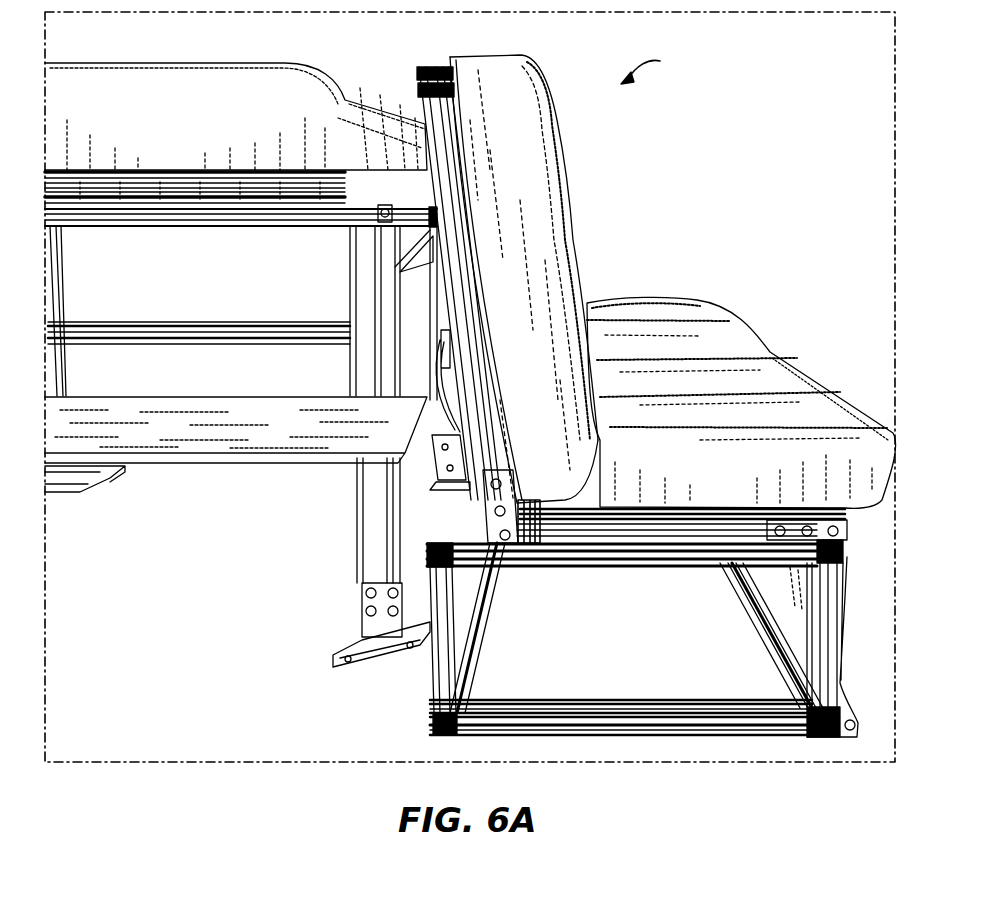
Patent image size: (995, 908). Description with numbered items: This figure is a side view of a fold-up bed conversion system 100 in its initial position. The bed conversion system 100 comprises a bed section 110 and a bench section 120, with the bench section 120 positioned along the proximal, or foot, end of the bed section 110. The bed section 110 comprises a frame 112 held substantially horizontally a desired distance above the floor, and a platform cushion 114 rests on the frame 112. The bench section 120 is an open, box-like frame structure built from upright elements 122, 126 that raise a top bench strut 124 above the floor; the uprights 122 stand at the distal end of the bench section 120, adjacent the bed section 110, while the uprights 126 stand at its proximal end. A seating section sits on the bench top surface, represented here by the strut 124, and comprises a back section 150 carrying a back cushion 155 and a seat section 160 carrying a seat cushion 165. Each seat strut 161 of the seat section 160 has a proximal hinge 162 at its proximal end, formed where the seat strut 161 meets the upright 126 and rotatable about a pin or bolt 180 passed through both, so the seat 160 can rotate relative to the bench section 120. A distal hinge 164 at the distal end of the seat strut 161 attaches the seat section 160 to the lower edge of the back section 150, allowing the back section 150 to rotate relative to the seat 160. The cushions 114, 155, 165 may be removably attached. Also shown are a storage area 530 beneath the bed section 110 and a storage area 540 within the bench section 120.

The bed conversion system 100 is at (664, 67).
The bed section 110 is at (225, 195).
The frame 112 is at (165, 195).
The platform cushion 114 is at (222, 100).
The bench section 120 is at (828, 630).
The upright element 122 is at (470, 605).
The top bench strut 124 is at (658, 566).
The upright element 126 is at (792, 600).
The back section 150 is at (468, 250).
The back cushion 155 is at (528, 256).
The seat section 160 is at (738, 340).
The seat strut 161 is at (600, 533).
The proximal hinge 162 is at (843, 547).
The distal hinge 164 is at (480, 492).
The seat cushion 165 is at (655, 356).
The pin or bolt 180 is at (847, 530).
The storage area 530 is at (247, 575).
The storage area 540 is at (662, 690).